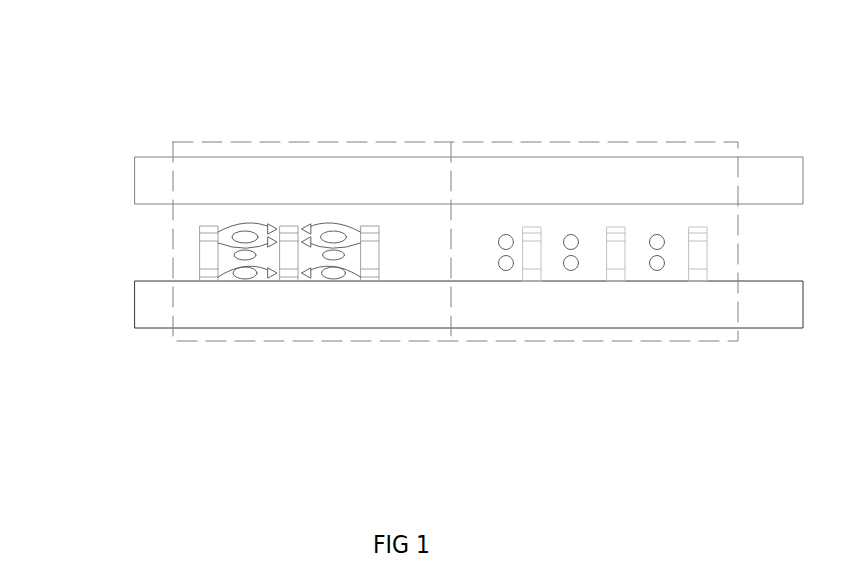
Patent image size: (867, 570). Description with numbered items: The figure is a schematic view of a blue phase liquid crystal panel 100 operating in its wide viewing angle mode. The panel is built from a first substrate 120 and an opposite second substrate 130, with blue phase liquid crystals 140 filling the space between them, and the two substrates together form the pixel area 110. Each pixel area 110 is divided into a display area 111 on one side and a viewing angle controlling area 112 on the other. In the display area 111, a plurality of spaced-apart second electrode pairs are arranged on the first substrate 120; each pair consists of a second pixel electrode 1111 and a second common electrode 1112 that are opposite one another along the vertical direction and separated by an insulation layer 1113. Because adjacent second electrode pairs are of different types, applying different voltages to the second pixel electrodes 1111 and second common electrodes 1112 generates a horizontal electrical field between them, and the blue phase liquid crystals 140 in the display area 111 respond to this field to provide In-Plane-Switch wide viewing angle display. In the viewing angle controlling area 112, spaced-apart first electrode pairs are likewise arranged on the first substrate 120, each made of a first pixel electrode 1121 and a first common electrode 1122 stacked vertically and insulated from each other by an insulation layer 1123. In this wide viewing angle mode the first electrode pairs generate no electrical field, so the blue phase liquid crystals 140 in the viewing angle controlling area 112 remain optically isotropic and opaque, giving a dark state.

The blue phase liquid crystal panel 100 is at (283, 77).
The pixel area 110 is at (513, 90).
The display area 111 is at (322, 142).
The viewing angle controlling area 112 is at (582, 142).
The second pixel electrode 1111 is at (214, 281).
The second common electrode 1112 is at (295, 281).
The insulation layer 1113 is at (207, 246).
The first pixel electrode 1121 is at (698, 227).
The first common electrode 1122 is at (697, 281).
The insulation layer 1123 is at (707, 255).
The first substrate 120 is at (135, 308).
The second substrate 130 is at (136, 182).
The blue phase liquid crystals 140 is at (497, 263).